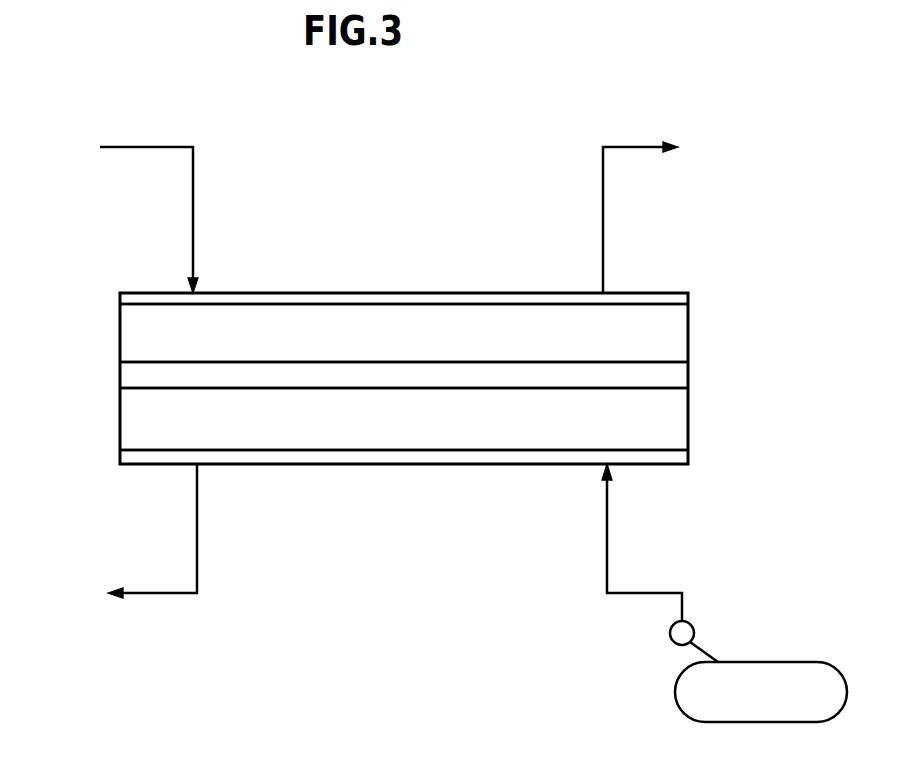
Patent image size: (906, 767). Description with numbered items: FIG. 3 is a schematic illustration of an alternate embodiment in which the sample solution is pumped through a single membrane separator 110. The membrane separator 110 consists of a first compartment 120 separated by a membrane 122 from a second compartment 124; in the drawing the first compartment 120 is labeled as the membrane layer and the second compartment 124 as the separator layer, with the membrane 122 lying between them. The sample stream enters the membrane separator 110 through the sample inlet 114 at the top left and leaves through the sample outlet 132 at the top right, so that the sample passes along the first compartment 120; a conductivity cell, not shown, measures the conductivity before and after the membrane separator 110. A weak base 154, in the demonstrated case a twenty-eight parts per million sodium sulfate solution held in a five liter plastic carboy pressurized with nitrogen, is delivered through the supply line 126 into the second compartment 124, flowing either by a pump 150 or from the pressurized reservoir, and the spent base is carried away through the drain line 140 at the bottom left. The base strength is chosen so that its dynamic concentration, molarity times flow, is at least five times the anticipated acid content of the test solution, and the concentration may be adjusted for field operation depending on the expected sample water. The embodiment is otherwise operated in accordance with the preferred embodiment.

The membrane separator 110 is at (705, 293).
The sample inlet 114 is at (193, 230).
The first compartment 120 is at (688, 333).
The membrane 122 is at (688, 372).
The second compartment 124 is at (688, 428).
The weak base inlet line 126 is at (607, 538).
The sample outlet 132 is at (603, 228).
The drain line 140 is at (197, 538).
The pump 150 is at (685, 621).
The weak base 154 is at (762, 662).